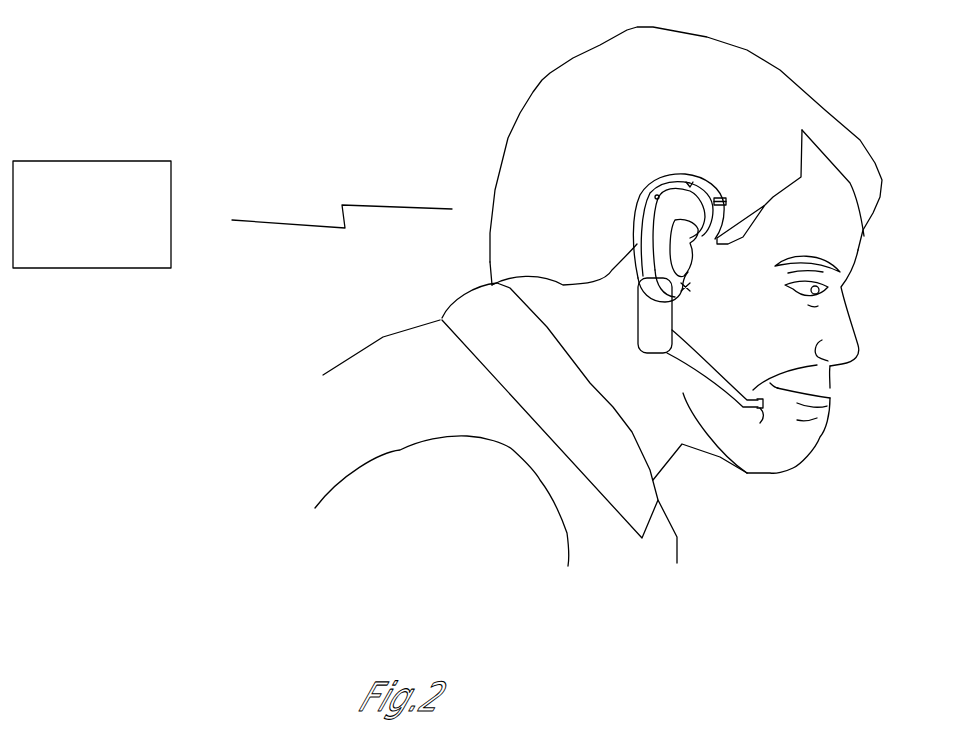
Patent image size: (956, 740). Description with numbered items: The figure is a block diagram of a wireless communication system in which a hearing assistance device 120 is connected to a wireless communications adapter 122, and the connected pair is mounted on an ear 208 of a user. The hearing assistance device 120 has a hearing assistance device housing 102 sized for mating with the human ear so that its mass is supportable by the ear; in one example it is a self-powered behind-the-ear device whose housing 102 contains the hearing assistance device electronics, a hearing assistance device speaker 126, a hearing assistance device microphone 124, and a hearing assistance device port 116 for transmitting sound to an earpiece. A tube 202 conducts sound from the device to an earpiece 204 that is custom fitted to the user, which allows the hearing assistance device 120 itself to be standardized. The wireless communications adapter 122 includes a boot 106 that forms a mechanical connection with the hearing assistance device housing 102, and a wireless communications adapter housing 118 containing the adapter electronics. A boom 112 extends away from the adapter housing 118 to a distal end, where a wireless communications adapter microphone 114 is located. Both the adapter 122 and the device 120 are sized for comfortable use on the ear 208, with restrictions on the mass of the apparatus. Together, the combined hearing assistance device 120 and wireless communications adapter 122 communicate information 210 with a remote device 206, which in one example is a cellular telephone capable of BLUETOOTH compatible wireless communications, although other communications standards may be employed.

The hearing assistance device housing 102 is at (649, 281).
The boot 106 is at (640, 191).
The boom 112 is at (721, 394).
The wireless communications adapter microphone 114 is at (761, 428).
The hearing assistance device port 116 is at (715, 180).
The wireless communications adapter housing 118 is at (616, 316).
The hearing assistance device 120 is at (620, 197).
The wireless communications adapter 122 is at (629, 305).
The hearing assistance device microphone 124 is at (657, 195).
The hearing assistance device speaker 126 is at (690, 187).
The tube 202 is at (720, 255).
The earpiece 204 is at (687, 253).
The remote device 206 is at (153, 160).
The ear 208 is at (700, 300).
The information 210 is at (422, 207).